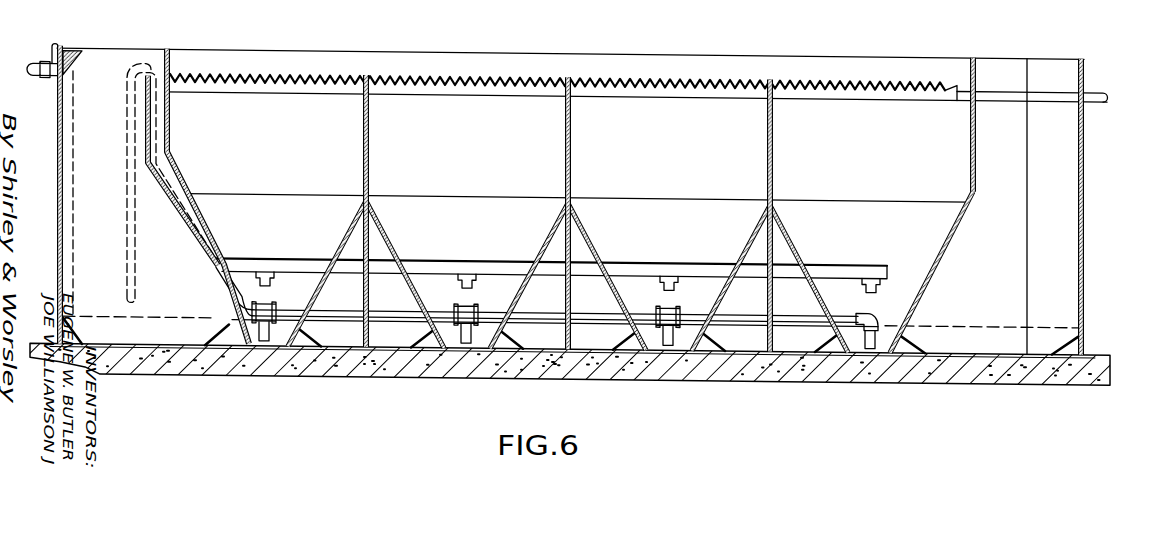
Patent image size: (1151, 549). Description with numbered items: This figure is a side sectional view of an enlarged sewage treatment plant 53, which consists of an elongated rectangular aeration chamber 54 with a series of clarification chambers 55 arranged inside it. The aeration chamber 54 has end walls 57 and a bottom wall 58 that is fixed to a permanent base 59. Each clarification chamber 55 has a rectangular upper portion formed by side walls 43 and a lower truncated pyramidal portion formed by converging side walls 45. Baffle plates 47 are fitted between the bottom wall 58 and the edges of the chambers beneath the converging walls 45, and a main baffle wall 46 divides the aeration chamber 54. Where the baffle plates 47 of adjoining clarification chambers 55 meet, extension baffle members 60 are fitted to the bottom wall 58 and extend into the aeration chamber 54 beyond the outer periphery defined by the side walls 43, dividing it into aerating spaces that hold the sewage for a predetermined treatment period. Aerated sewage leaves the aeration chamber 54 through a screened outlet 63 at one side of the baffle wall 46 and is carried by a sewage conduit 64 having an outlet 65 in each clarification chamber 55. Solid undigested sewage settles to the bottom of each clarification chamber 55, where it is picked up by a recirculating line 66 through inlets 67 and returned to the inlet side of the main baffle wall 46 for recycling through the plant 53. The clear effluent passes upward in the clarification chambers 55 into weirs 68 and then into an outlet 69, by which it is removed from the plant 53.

The side walls 43 is at (362, 148).
The converging side walls 45 is at (352, 221).
The main baffle wall 46 is at (86, 191).
The baffle plates 47 is at (326, 295).
The enlarged plant 53 is at (1053, 34).
The aeration chamber 54 is at (1041, 205).
The clarification chambers 55 is at (261, 139).
The end walls 57 is at (58, 127).
The bottom wall 58 is at (628, 347).
The permanent base 59 is at (917, 367).
The extension baffle members 60 is at (984, 245).
The screened outlet 63 is at (163, 106).
The sewage conduit 64 is at (285, 256).
The outlet 65 is at (274, 279).
The recirculating line 66 is at (417, 309).
The inlets 67 is at (305, 319).
The weirs 68 is at (812, 79).
The outlet 69 is at (1100, 81).